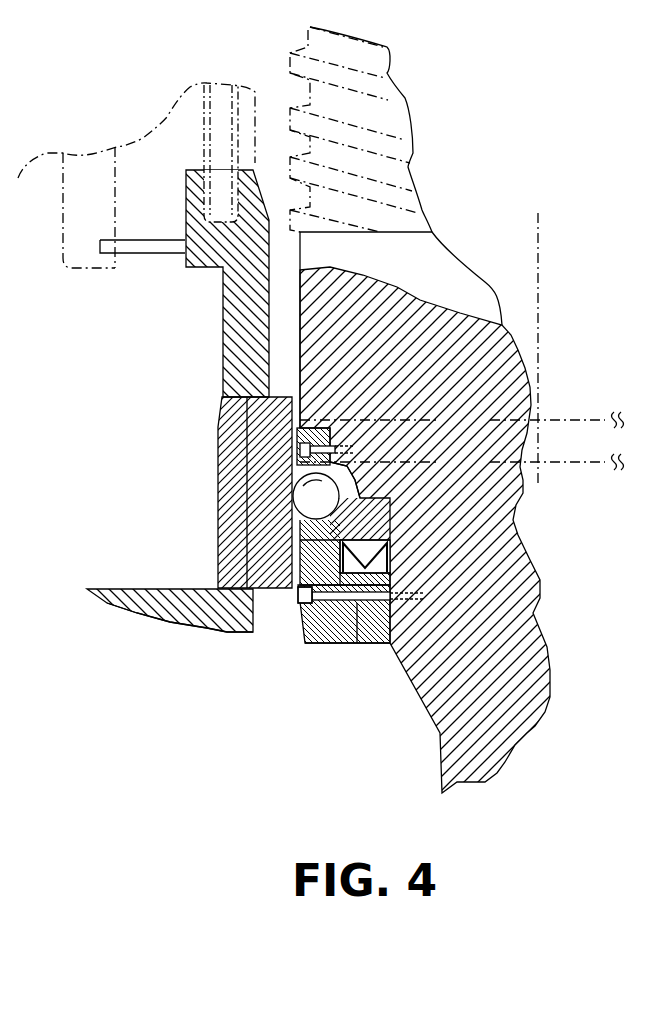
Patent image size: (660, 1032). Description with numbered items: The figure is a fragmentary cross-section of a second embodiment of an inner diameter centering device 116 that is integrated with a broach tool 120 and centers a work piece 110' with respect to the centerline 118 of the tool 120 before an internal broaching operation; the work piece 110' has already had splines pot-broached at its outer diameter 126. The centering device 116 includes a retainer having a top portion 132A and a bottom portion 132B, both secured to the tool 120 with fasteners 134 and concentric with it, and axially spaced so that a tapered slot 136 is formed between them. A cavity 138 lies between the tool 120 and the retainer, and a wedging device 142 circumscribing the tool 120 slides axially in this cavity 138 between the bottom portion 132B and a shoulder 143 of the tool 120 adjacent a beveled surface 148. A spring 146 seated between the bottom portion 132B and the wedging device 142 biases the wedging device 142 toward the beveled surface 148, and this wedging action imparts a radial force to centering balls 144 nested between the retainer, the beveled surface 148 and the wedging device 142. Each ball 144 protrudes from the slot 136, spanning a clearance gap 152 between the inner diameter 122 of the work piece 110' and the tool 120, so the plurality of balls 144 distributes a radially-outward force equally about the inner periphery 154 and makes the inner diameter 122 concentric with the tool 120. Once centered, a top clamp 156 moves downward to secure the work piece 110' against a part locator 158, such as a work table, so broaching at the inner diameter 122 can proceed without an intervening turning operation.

The work piece 110' is at (180, 633).
The inner diameter centering device 116 is at (318, 656).
The centerline 118 is at (538, 287).
The broach tool 120 is at (510, 378).
The inner diameter 122 is at (462, 421).
The outer diameter 126 is at (462, 463).
The top portion 132A is at (262, 400).
The bottom portion 132B is at (292, 566).
The fasteners 134 is at (320, 433).
The tapered slot 136 is at (305, 475).
The cavity 138 is at (310, 645).
The wedging device 142 is at (395, 512).
The shoulder 143 is at (395, 512).
The centering balls 144 is at (300, 488).
The spring 146 is at (365, 543).
The beveled surface 148 is at (316, 494).
The clearance gap 152 is at (296, 590).
The inner periphery 154 is at (299, 537).
The top clamp 156 is at (247, 348).
The part locator 158 is at (137, 613).